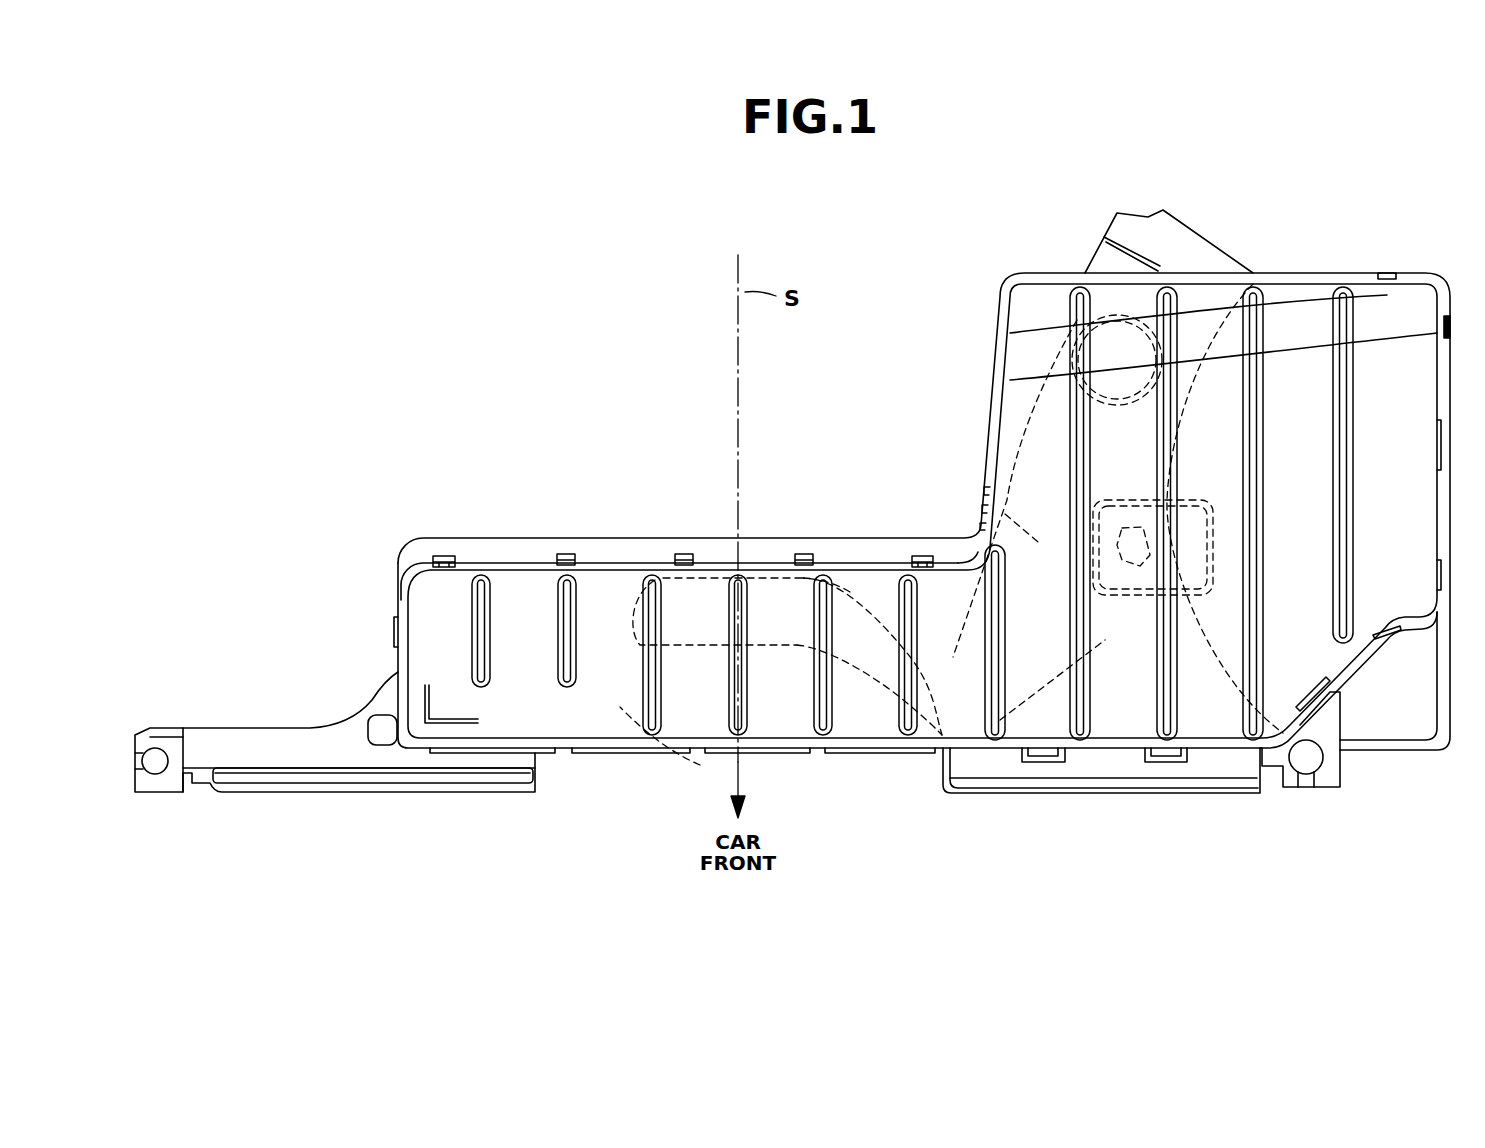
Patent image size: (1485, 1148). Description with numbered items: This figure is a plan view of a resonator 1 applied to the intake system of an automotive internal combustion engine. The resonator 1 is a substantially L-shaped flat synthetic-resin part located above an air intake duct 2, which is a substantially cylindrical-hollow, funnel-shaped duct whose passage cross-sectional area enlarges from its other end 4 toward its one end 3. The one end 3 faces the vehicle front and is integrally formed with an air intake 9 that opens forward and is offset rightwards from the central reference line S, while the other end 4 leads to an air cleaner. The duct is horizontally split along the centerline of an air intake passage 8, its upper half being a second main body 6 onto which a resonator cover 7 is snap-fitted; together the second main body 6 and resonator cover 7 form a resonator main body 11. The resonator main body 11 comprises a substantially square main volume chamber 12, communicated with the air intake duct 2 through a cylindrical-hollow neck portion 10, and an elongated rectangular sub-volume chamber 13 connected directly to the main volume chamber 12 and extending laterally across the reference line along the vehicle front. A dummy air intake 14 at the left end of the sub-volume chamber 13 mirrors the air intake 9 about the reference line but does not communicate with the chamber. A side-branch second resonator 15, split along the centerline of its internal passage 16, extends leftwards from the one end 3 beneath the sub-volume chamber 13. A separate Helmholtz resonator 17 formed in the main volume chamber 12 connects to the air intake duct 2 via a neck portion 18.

The resonator 1 is at (620, 503).
The air intake duct 2 is at (1045, 415).
The one end 3 is at (1221, 718).
The other end 4 is at (1120, 226).
The second main body 6 is at (438, 552).
The resonator cover 7 is at (532, 600).
The air intake passage 8 is at (990, 512).
The air intake 9 is at (1037, 794).
The neck portion 10 is at (1125, 306).
The resonator main body 11 is at (818, 838).
The main volume chamber 12 is at (1000, 720).
The sub-volume chamber 13 is at (700, 765).
The dummy air intake 14 is at (287, 794).
The second resonator 15 is at (850, 592).
The internal passage 16 is at (705, 622).
The Helmholtz resonator 17 is at (1095, 498).
The neck portion 18 is at (1117, 540).